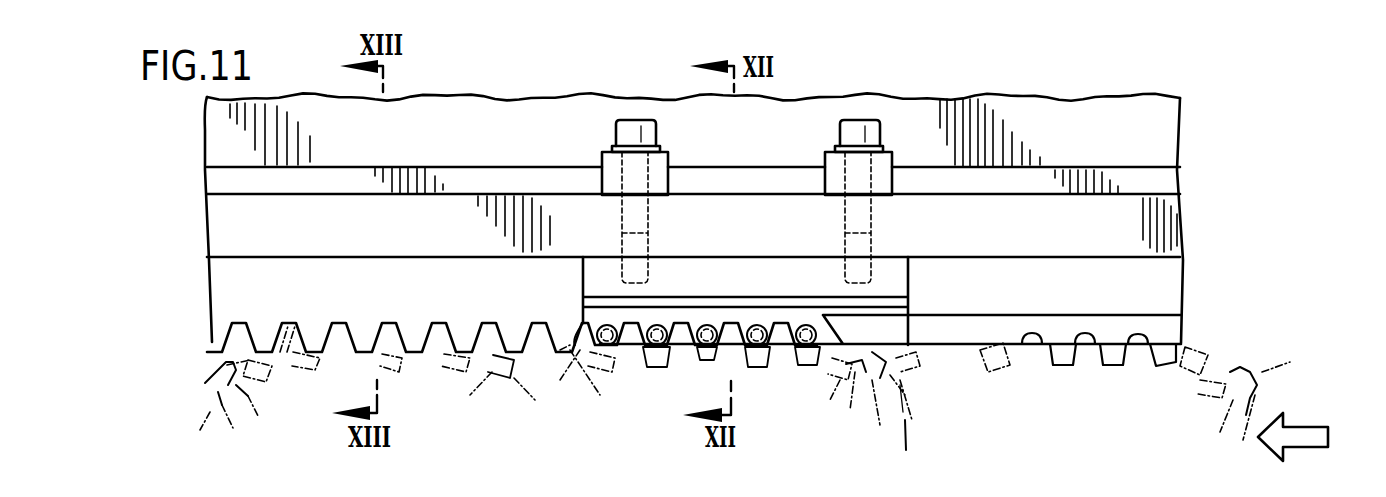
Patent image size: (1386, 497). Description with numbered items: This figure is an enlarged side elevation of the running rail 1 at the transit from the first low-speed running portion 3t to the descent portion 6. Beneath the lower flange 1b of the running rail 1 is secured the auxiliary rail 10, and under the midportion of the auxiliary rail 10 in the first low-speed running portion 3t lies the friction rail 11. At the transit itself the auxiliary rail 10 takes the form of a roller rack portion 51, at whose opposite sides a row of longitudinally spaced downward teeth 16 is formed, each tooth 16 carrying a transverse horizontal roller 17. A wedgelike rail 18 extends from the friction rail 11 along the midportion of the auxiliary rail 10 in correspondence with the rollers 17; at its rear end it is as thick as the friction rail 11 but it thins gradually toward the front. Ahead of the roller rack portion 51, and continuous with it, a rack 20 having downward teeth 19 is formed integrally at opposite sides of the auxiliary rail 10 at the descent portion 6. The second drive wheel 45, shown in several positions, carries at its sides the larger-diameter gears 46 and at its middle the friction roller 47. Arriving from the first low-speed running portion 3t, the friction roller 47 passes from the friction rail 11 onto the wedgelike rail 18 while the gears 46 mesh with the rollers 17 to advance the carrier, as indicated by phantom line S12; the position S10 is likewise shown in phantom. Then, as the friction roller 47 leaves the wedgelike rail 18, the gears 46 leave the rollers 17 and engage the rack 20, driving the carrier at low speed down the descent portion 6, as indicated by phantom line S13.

The running rail 1 is at (1162, 138).
The lower flange 1b is at (1162, 226).
The first low-speed running portion 3t is at (1090, 147).
The descent portion 6 is at (417, 148).
The auxiliary rail 10 is at (1162, 290).
The friction rail 11 is at (1168, 332).
The downward teeth 16 is at (575, 342).
The roller 17 is at (610, 350).
The wedgelike rail 18 is at (783, 353).
The downward teeth 19 is at (407, 344).
The rack 20 is at (258, 335).
The second drive wheel 45 is at (214, 388).
The gears 46 is at (385, 326).
The friction roller 47 is at (510, 360).
The roller rack portion 51 is at (888, 272).
The section position S10 is at (1033, 332).
The phantom line S12 is at (930, 350).
The phantom line S13 is at (290, 320).